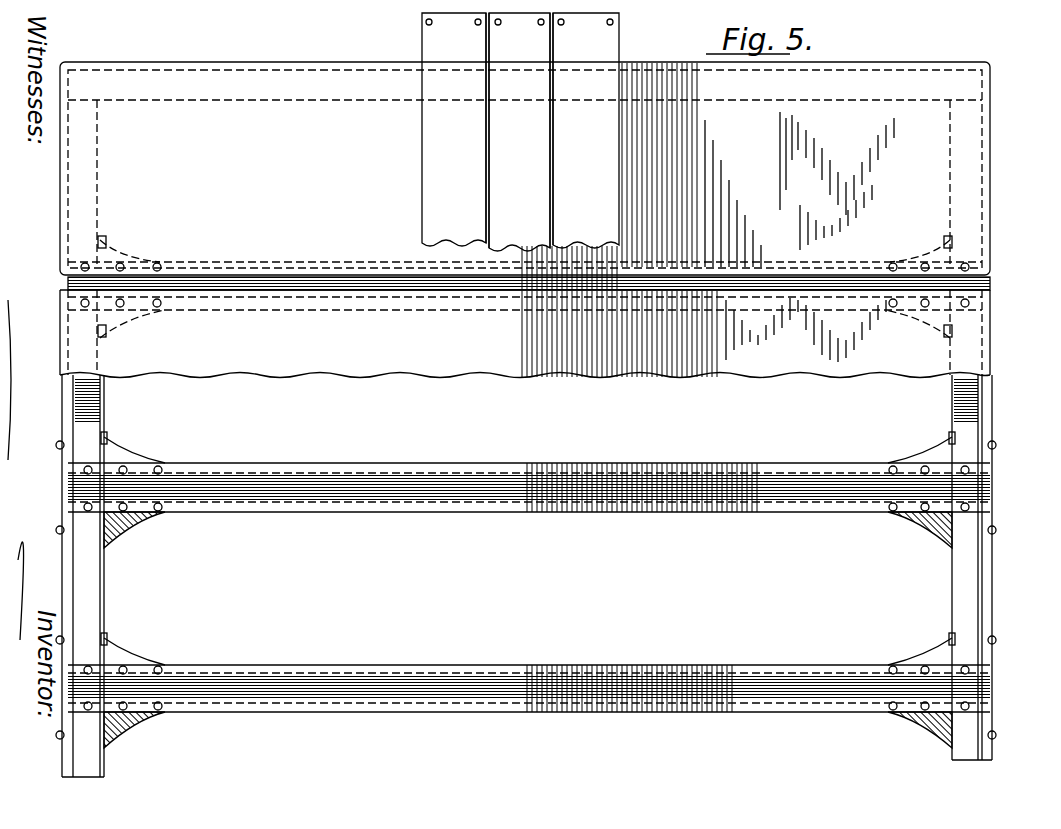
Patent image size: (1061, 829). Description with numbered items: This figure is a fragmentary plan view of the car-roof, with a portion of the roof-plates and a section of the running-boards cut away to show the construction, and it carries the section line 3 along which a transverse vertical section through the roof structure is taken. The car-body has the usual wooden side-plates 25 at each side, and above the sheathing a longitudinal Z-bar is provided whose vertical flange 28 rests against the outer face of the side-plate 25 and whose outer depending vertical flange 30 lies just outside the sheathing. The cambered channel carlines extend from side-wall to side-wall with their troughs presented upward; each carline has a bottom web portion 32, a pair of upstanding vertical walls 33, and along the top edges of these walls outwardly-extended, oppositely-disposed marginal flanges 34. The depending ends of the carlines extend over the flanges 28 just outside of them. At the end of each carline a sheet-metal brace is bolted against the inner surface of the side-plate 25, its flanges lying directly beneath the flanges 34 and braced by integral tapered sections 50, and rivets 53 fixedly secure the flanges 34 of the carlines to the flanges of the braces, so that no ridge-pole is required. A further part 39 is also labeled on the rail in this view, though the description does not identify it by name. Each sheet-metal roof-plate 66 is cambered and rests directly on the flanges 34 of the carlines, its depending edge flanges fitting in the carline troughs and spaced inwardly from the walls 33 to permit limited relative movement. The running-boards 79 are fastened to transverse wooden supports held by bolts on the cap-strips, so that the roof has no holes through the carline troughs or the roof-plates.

The section line 3— 3 is at (39, 352).
The side-plate 25 is at (96, 584).
The vertical flange 28 is at (75, 559).
The outer depending vertical flange 30 is at (63, 559).
The bottom web portion 32 is at (388, 262).
The upstanding vertical walls 33 is at (345, 475).
The marginal flanges 34 is at (815, 472).
The rail plate 39 is at (275, 505).
The tapered sections 50 is at (925, 448).
The rivets 53 is at (158, 466).
The sheet-metal roof-plate 66 is at (525, 220).
The running-boards 79 is at (520, 132).